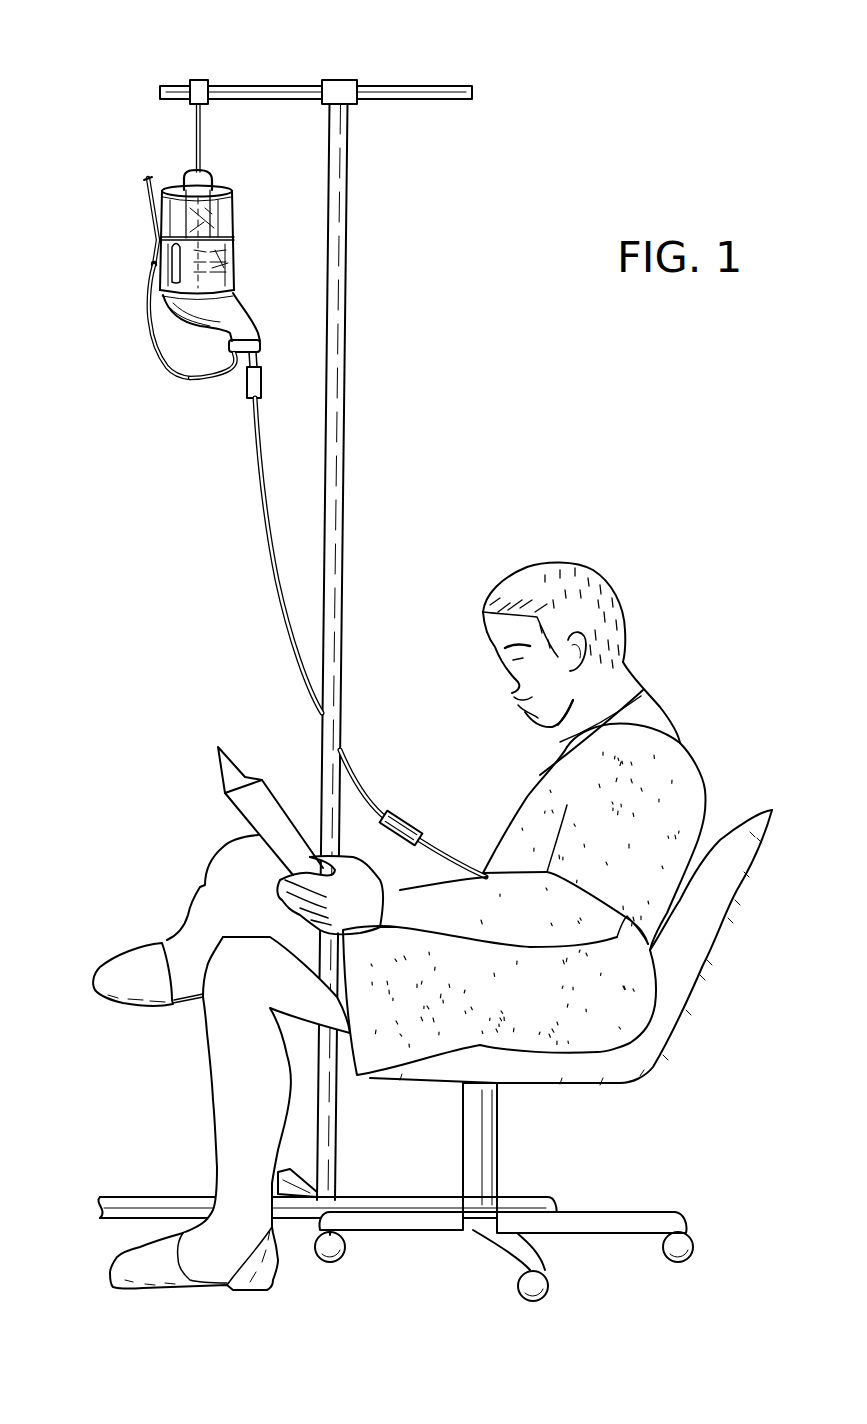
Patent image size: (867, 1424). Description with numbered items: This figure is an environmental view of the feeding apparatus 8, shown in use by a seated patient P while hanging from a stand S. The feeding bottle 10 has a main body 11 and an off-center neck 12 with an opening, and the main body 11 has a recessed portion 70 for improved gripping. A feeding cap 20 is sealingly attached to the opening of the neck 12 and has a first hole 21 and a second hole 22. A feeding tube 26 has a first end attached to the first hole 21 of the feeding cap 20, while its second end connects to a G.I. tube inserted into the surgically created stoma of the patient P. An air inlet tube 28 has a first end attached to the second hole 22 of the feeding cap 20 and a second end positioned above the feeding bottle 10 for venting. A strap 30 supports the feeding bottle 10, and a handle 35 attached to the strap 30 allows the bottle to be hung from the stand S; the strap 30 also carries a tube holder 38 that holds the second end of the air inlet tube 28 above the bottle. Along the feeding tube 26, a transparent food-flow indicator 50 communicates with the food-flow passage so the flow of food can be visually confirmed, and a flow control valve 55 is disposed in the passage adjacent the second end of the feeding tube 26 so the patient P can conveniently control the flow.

The stand S is at (380, 87).
The feeding apparatus 8 is at (157, 245).
The feeding bottle 10 is at (235, 207).
The main body 11 is at (218, 267).
The off-center neck 12 is at (240, 320).
The feeding cap 20 is at (247, 394).
The first hole 21 is at (260, 346).
The second hole 22 is at (230, 354).
The feeding tube 26 is at (260, 503).
The air inlet tube 28 is at (148, 325).
The strap 30 is at (233, 237).
The handle 35 is at (190, 177).
The tube holder 38 is at (158, 228).
The transparent food-flow indicator 50 is at (263, 382).
The flow control valve 55 is at (413, 827).
The recessed portion 70 is at (156, 265).
The patient P is at (642, 813).